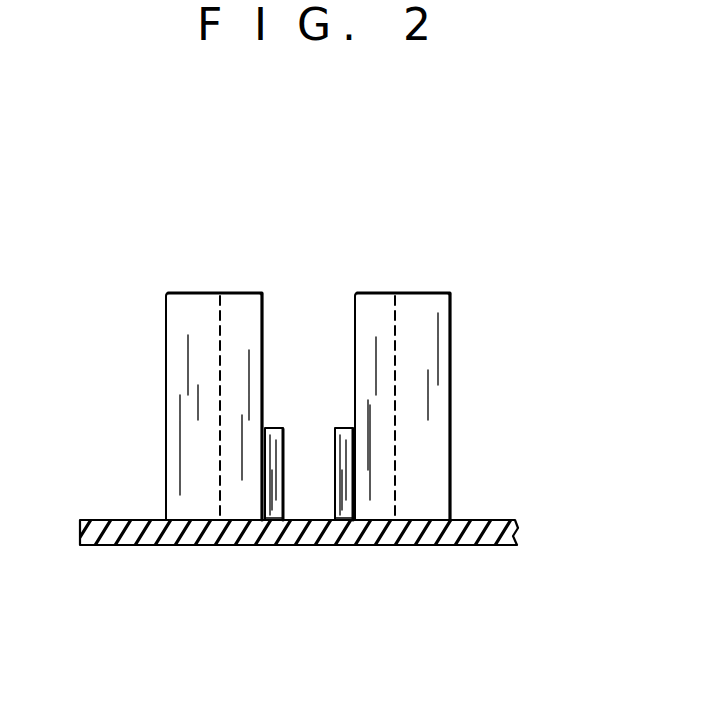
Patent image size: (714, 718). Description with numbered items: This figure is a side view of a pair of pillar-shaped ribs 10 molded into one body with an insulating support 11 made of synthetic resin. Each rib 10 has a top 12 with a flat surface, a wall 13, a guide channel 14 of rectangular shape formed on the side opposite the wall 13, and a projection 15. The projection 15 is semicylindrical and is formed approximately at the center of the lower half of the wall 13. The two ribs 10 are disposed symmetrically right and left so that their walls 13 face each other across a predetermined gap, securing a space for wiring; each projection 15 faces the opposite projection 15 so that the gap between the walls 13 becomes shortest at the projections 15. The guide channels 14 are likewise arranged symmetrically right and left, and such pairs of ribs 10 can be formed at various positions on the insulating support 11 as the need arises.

The rib 10 is at (252, 212).
The insulating support 11 is at (484, 520).
The top 12 is at (192, 292).
The wall 13 is at (270, 480).
The guide channel 14 is at (215, 460).
The projection 15 is at (346, 427).